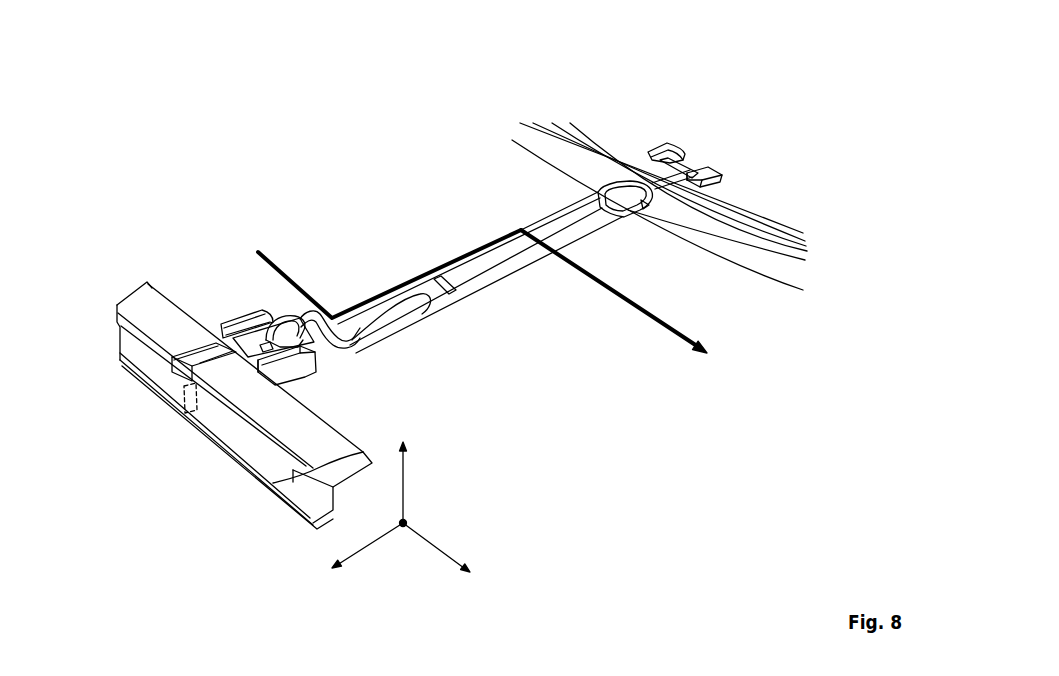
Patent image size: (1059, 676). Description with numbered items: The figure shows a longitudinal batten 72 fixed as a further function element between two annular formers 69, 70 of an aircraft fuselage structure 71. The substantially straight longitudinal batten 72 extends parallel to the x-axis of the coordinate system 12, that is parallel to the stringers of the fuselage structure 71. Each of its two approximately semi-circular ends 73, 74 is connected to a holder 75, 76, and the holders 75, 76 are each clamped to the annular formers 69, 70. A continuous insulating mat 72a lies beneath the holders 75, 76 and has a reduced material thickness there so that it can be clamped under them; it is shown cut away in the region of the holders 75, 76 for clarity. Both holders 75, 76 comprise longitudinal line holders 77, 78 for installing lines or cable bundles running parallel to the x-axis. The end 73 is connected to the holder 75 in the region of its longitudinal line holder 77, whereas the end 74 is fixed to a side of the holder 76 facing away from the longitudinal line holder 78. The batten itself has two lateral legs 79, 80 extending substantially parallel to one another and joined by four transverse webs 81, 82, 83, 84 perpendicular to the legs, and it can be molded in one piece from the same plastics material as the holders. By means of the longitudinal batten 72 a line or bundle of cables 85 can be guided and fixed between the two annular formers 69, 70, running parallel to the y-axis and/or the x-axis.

The coordinate system 12 is at (403, 527).
The annular former 69 is at (210, 350).
The annular former 70 is at (587, 137).
The fuselage structure 71 is at (355, 268).
The longitudinal batten 72 is at (489, 234).
The insulating mat 72a is at (143, 310).
The end of the longitudinal batten 73 is at (204, 255).
The end of the longitudinal batten 74 is at (642, 236).
The holder 75 is at (233, 300).
The holder 76 is at (762, 113).
The longitudinal line holder 77 is at (282, 366).
The longitudinal line holder 78 is at (713, 170).
The lateral leg 79 is at (480, 243).
The lateral leg 80 is at (550, 260).
The transverse web 81 is at (439, 353).
The transverse web 82 is at (430, 308).
The transverse web 83 is at (566, 127).
The transverse web 84 is at (599, 205).
The line or bundle of cables 85 is at (677, 338).